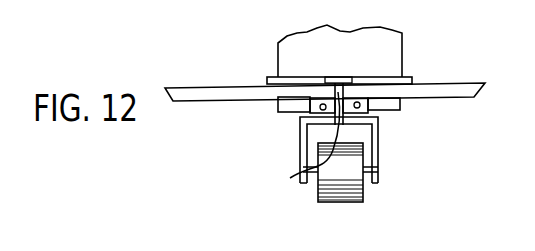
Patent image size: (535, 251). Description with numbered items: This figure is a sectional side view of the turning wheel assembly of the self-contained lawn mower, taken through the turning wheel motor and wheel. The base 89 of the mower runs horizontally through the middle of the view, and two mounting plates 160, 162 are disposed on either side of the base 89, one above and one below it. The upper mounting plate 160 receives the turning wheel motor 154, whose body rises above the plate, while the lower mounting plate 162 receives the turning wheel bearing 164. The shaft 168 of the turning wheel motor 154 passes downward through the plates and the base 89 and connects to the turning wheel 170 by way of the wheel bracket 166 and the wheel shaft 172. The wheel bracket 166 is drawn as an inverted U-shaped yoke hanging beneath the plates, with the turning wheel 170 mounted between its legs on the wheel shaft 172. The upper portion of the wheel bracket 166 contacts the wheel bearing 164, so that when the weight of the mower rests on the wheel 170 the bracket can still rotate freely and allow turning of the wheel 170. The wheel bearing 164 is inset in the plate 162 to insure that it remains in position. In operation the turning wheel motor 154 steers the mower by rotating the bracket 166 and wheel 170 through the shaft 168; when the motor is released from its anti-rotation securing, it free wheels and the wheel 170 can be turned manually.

The base 89 is at (232, 93).
The turning wheel motor 154 is at (403, 42).
The mounting plate 160 is at (412, 80).
The mounting plate 162 is at (280, 110).
The turning wheel bearing 164 is at (312, 110).
The wheel bracket 166 is at (380, 148).
The shaft 168 is at (299, 145).
The turning wheel 170 is at (340, 188).
The wheel shaft 172 is at (369, 178).